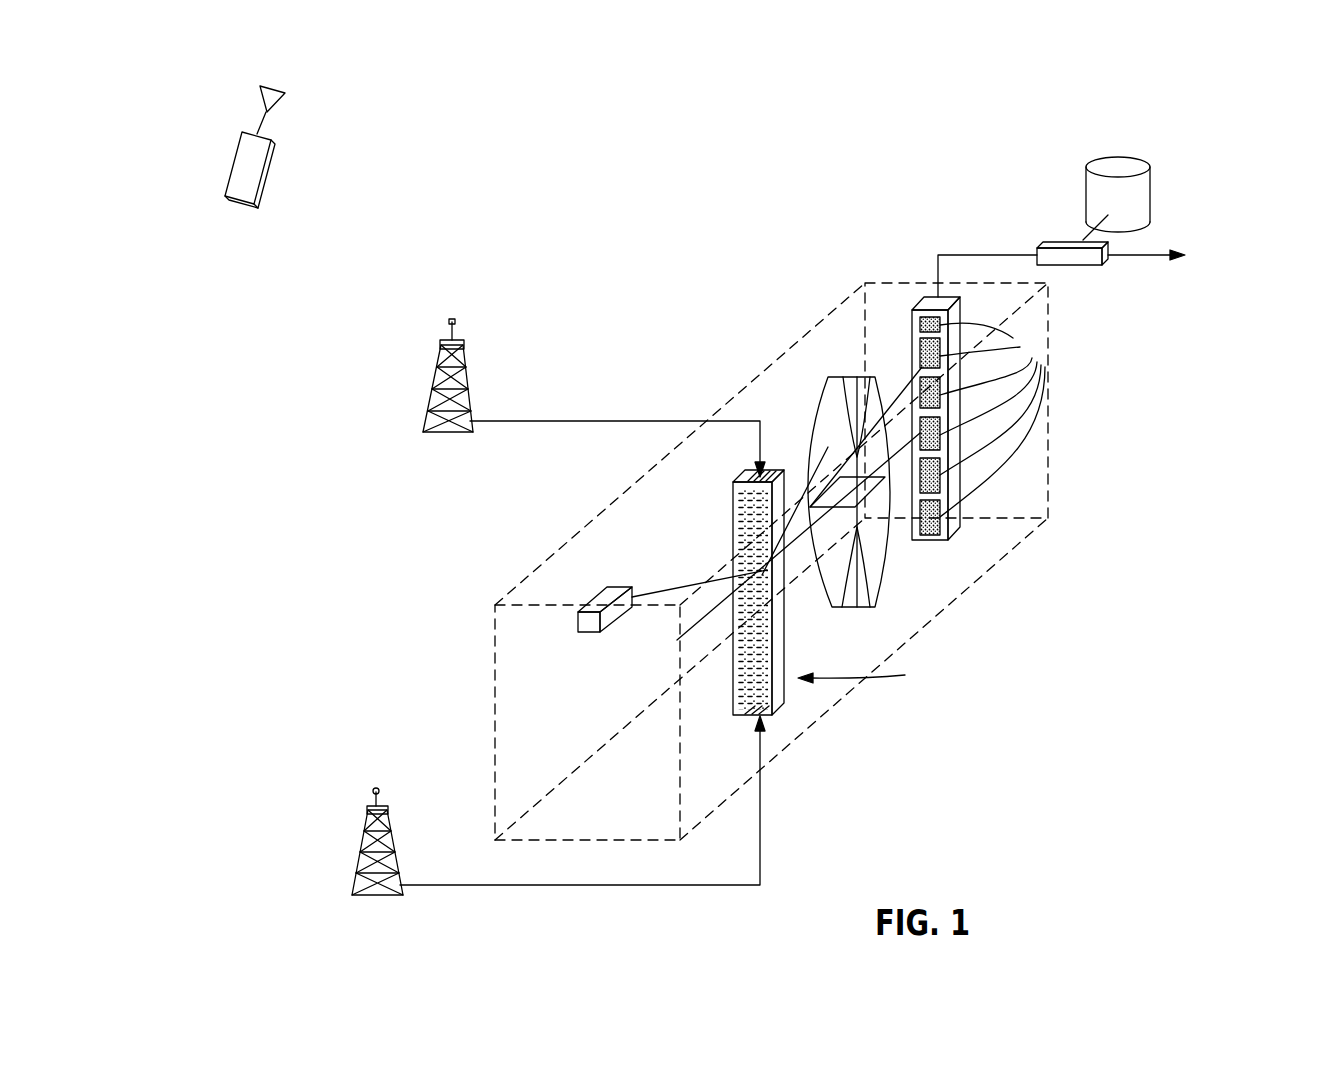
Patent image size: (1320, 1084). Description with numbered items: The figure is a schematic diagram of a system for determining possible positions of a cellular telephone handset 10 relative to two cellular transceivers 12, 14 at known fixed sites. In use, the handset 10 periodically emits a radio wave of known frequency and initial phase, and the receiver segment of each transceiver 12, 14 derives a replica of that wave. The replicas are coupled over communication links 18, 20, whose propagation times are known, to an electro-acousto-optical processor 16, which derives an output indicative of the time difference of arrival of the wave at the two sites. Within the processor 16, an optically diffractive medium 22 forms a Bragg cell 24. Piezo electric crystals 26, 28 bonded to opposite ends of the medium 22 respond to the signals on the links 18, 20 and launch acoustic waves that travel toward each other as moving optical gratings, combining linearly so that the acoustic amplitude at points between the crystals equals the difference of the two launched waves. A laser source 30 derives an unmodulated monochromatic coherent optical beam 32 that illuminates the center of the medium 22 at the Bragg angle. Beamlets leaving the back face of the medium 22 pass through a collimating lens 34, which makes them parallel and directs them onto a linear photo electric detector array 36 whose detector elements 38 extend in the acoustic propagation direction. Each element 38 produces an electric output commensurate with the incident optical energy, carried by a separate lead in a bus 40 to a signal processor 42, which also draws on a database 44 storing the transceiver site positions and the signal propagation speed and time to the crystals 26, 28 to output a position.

The cellular telephone handset 10 is at (268, 146).
The cellular transceiver 12 is at (458, 322).
The cellular transceiver 14 is at (380, 791).
The electro-acousto-optical processor 16 is at (842, 724).
The communication link 18 is at (576, 421).
The communication link 20 is at (583, 887).
The optically diffractive medium 22 is at (788, 625).
The Bragg cell 24 is at (868, 678).
The piezo electric crystal 26 is at (757, 478).
The piezo electric crystal 28 is at (764, 720).
The laser source 30 is at (603, 598).
The optical beam 32 is at (668, 592).
The collimating lens 34 is at (842, 374).
The linear photo electric detector array 36 is at (965, 389).
The optical-electric detector element 38 is at (987, 426).
The bus 40 is at (1000, 255).
The signal processor 42 is at (1088, 266).
The database 44 is at (1143, 162).